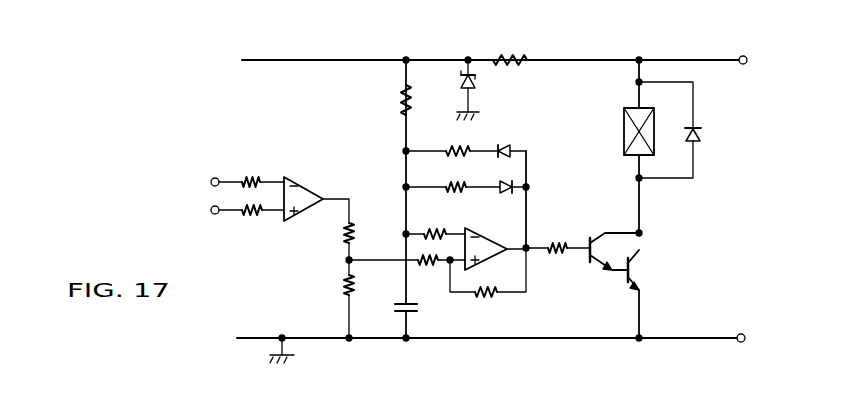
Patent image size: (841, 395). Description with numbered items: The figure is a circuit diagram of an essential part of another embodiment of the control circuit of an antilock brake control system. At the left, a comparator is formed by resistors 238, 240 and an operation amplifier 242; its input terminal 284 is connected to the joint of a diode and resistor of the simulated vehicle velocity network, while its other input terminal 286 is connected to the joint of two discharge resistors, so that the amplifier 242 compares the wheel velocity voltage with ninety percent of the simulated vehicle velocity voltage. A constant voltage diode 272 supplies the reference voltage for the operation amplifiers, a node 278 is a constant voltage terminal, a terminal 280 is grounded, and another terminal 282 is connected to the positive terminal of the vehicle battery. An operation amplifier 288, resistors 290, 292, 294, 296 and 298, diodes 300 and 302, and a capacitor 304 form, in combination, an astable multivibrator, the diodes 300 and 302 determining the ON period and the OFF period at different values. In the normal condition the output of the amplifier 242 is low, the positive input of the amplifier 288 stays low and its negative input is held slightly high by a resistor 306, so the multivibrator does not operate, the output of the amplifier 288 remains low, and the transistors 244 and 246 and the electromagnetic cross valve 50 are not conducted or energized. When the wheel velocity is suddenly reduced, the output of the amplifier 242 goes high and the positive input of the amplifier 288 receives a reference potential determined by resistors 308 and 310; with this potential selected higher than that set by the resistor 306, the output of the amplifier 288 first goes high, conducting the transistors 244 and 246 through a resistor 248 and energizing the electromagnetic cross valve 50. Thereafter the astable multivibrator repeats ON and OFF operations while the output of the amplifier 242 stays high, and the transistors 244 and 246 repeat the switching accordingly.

The electromagnetic cross valve 50 is at (623, 112).
The resistor 238 is at (248, 178).
The resistor 240 is at (257, 224).
The operation amplifier 242 is at (306, 174).
The transistor 244 is at (600, 262).
The transistor 246 is at (646, 266).
The resistor 248 is at (560, 245).
The constant voltage diode 272 is at (476, 84).
The node 278 is at (411, 52).
The terminal 280 is at (746, 337).
The terminal 282 is at (745, 65).
The input terminal 284 is at (212, 182).
The input terminal 286 is at (211, 210).
The operation amplifier 288 is at (470, 275).
The resistor 290 is at (460, 143).
The resistor 292 is at (527, 152).
The resistor 294 is at (420, 230).
The resistor 296 is at (430, 272).
The resistor 298 is at (494, 298).
The diode 300 is at (503, 147).
The diode 302 is at (507, 192).
The capacitor 304 is at (392, 306).
The resistor 306 is at (395, 97).
The resistor 308 is at (348, 236).
The resistor 310 is at (344, 290).